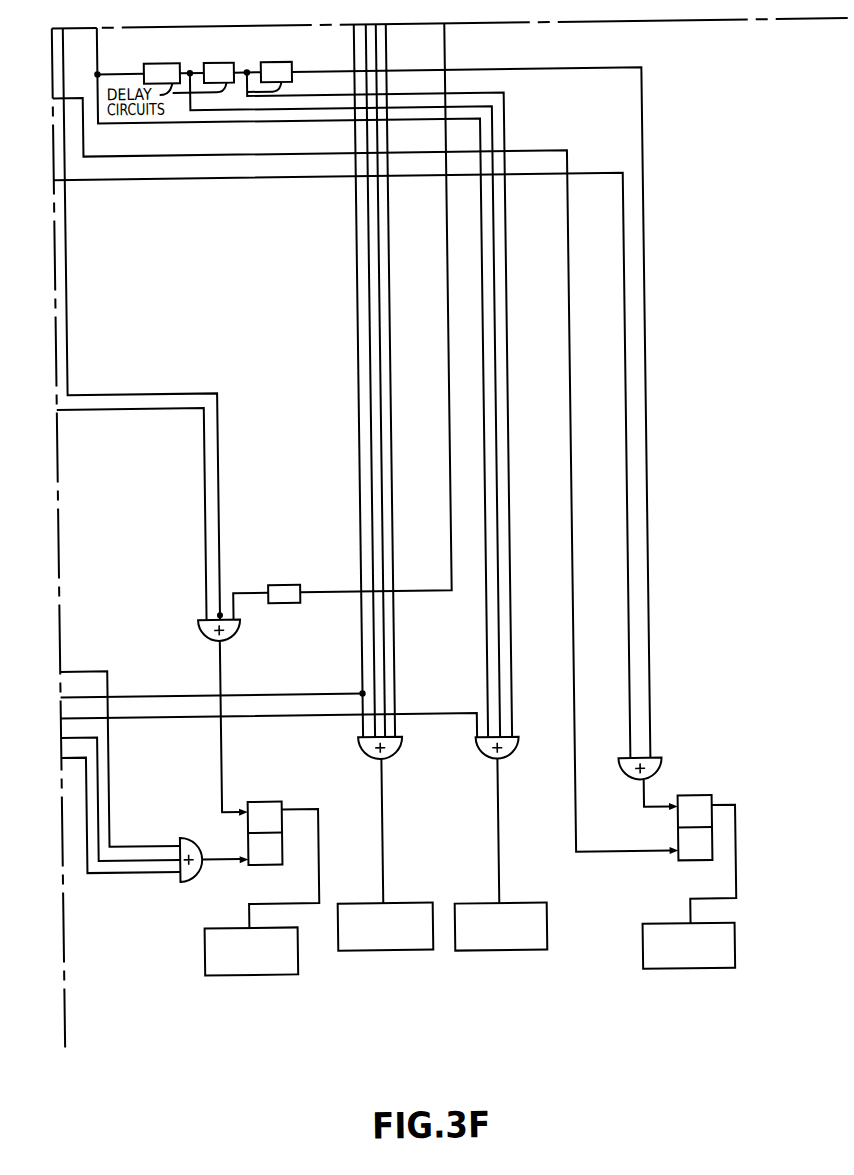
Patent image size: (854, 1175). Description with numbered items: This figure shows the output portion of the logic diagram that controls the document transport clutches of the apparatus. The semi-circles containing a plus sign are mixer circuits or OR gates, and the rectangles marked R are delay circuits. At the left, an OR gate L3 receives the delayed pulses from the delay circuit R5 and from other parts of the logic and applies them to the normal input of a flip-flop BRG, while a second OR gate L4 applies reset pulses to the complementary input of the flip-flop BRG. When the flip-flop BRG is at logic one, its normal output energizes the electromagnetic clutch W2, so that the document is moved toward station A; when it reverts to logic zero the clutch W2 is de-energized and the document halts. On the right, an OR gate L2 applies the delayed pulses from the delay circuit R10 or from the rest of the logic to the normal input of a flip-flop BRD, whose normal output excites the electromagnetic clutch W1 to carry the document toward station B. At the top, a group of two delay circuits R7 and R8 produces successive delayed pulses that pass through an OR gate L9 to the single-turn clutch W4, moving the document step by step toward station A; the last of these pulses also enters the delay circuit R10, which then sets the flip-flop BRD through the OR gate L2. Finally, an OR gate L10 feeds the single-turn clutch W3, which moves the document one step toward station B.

The delay circuit R7 is at (182, 48).
The delay circuit R8 is at (246, 47).
The delay circuit R10 is at (306, 49).
The delay circuit R5 is at (271, 584).
The OR gate L3 is at (232, 634).
The OR gate L4 is at (194, 871).
The OR gate L10 is at (390, 753).
The OR gate L9 is at (507, 754).
The OR gate L2 is at (627, 775).
The flip-flop BRG is at (272, 830).
The flip-flop BRD is at (698, 827).
The electromagnetic clutch W1 is at (639, 961).
The electromagnetic clutch W2 is at (201, 958).
The single-turn clutch W3 is at (354, 908).
The single-turn clutch W4 is at (466, 909).